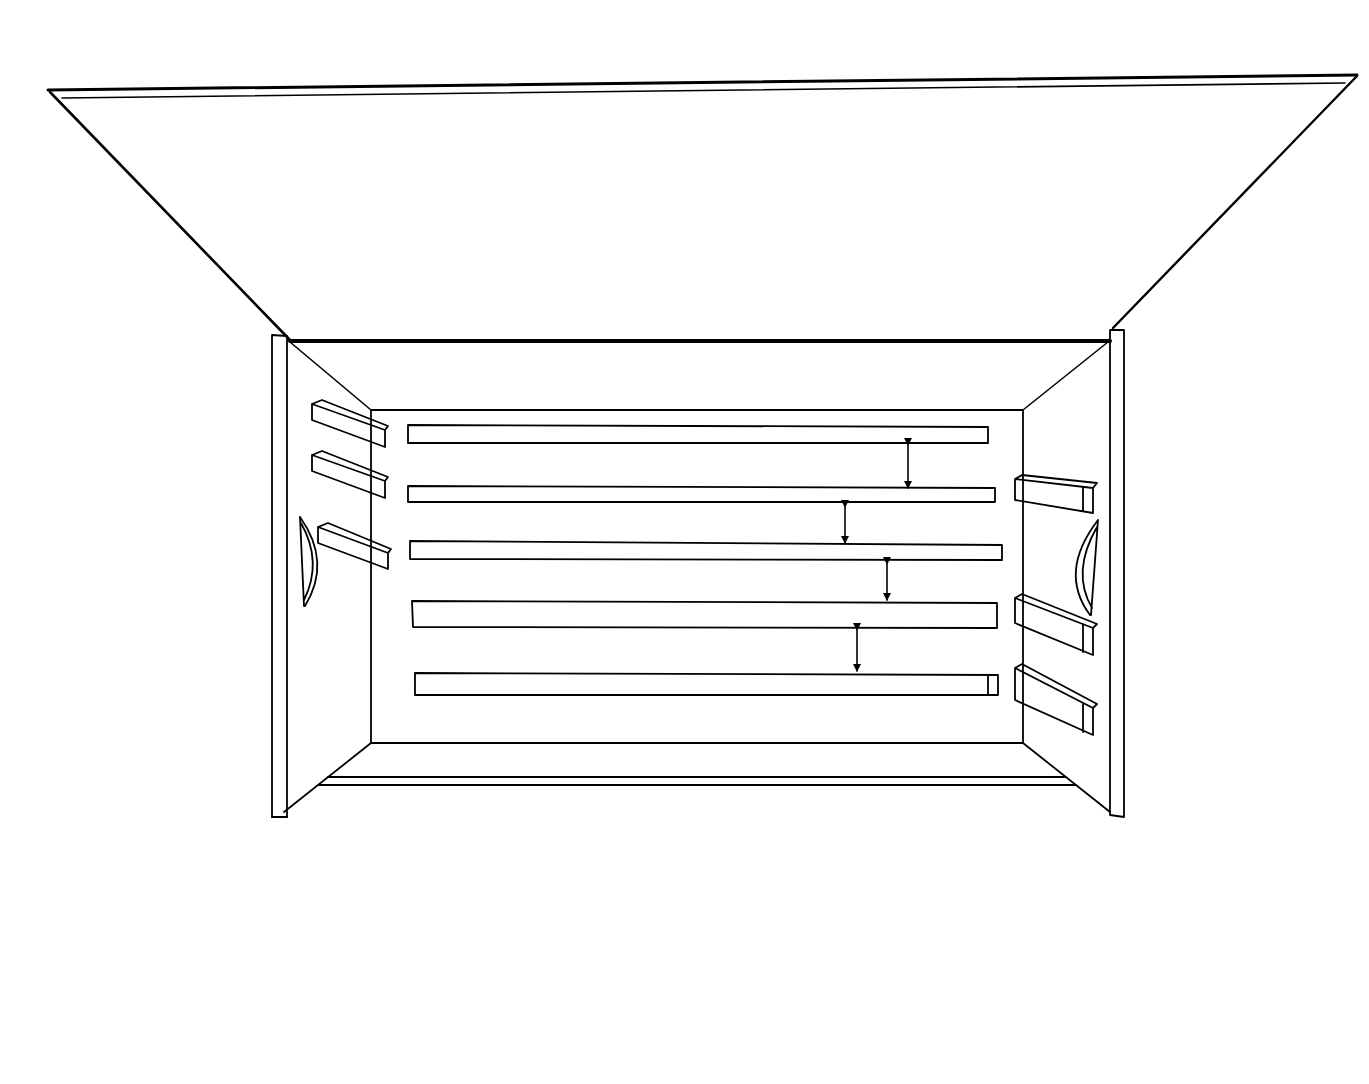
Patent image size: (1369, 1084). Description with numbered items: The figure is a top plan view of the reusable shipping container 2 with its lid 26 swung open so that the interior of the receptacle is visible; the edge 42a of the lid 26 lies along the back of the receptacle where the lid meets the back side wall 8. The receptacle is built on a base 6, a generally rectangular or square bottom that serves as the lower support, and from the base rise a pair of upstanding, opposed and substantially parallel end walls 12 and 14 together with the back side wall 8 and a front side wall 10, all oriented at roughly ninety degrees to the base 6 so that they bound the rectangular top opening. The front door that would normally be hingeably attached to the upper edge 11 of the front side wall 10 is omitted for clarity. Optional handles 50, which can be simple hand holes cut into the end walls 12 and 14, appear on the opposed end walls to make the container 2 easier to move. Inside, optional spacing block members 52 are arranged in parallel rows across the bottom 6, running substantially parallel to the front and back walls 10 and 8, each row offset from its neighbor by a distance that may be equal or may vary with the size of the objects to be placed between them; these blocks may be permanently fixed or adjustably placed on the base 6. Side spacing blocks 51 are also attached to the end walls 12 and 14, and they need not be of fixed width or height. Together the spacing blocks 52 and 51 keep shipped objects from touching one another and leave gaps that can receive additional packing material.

The reusable shipping container 2 is at (1272, 411).
The lid 26 is at (721, 269).
The lid rear edge 42a is at (955, 341).
The back side wall 8 is at (649, 577).
The end wall 14 is at (314, 681).
The end wall 12 is at (1068, 459).
The front side wall 10 is at (660, 763).
The upper edge 11 is at (334, 780).
The base 6 is at (682, 596).
The spacing block members 52 is at (988, 683).
The side spacing blocks 51 is at (318, 410).
The handles 50 is at (293, 606).